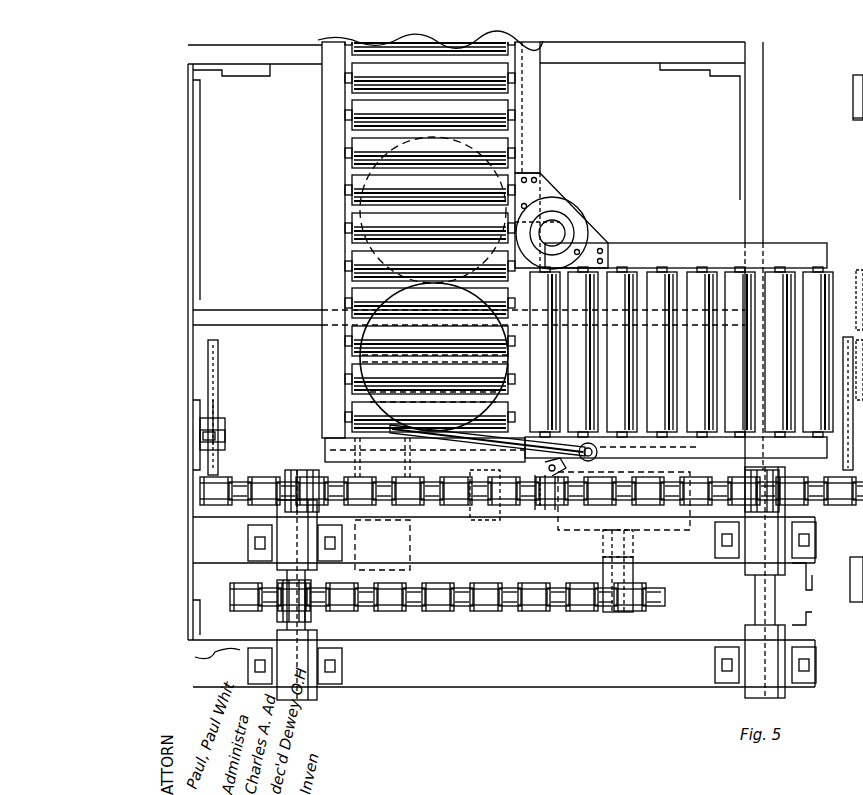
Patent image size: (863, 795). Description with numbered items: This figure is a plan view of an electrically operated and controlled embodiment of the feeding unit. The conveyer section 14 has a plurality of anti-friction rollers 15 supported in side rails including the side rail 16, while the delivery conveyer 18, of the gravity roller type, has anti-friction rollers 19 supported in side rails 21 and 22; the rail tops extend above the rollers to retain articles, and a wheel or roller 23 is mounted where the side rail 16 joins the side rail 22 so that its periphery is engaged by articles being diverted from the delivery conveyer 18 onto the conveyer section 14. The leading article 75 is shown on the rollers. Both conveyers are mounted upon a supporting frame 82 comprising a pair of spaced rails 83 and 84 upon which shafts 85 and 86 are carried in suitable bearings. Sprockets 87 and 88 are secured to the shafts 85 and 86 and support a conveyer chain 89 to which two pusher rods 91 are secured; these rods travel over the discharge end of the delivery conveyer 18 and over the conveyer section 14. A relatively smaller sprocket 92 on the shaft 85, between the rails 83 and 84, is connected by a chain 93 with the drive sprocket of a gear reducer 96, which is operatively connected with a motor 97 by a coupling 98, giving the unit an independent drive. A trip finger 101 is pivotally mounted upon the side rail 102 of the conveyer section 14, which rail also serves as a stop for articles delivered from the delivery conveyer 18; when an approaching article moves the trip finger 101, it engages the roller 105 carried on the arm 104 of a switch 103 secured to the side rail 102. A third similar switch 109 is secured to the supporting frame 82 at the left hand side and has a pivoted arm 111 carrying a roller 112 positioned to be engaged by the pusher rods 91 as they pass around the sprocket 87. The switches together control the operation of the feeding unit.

The conveyer section 14 is at (689, 314).
The anti-friction rollers 15 is at (623, 268).
The side rail 16 is at (704, 252).
The delivery conveyer 18 is at (547, 128).
The anti-friction rollers 19 is at (353, 192).
The side rail 21 is at (322, 216).
The side rail 22 is at (535, 166).
The wheel or roller 23 is at (572, 218).
The leading article 75 is at (362, 362).
The supporting frame 82 is at (185, 186).
The rail 83 is at (702, 552).
The rail 84 is at (695, 650).
The shaft 85 is at (318, 622).
The shaft 86 is at (760, 608).
The sprocket 87 is at (285, 474).
The sprocket 88 is at (786, 470).
The conveyer chain 89 is at (396, 508).
The pusher rods 91 is at (216, 375).
The smaller sprocket 92 is at (278, 615).
The chain 93 is at (525, 614).
The gear reducer 96 is at (605, 512).
The motor 97 is at (450, 522).
The coupling 98 is at (492, 508).
The trip finger 101 is at (440, 436).
The side rail 102 is at (330, 455).
The switch 103 is at (610, 458).
The arm 104 is at (556, 505).
The roller 105 is at (535, 510).
The switch 109 is at (225, 426).
The pivoted arm 111 is at (209, 431).
The roller 112 is at (222, 441).